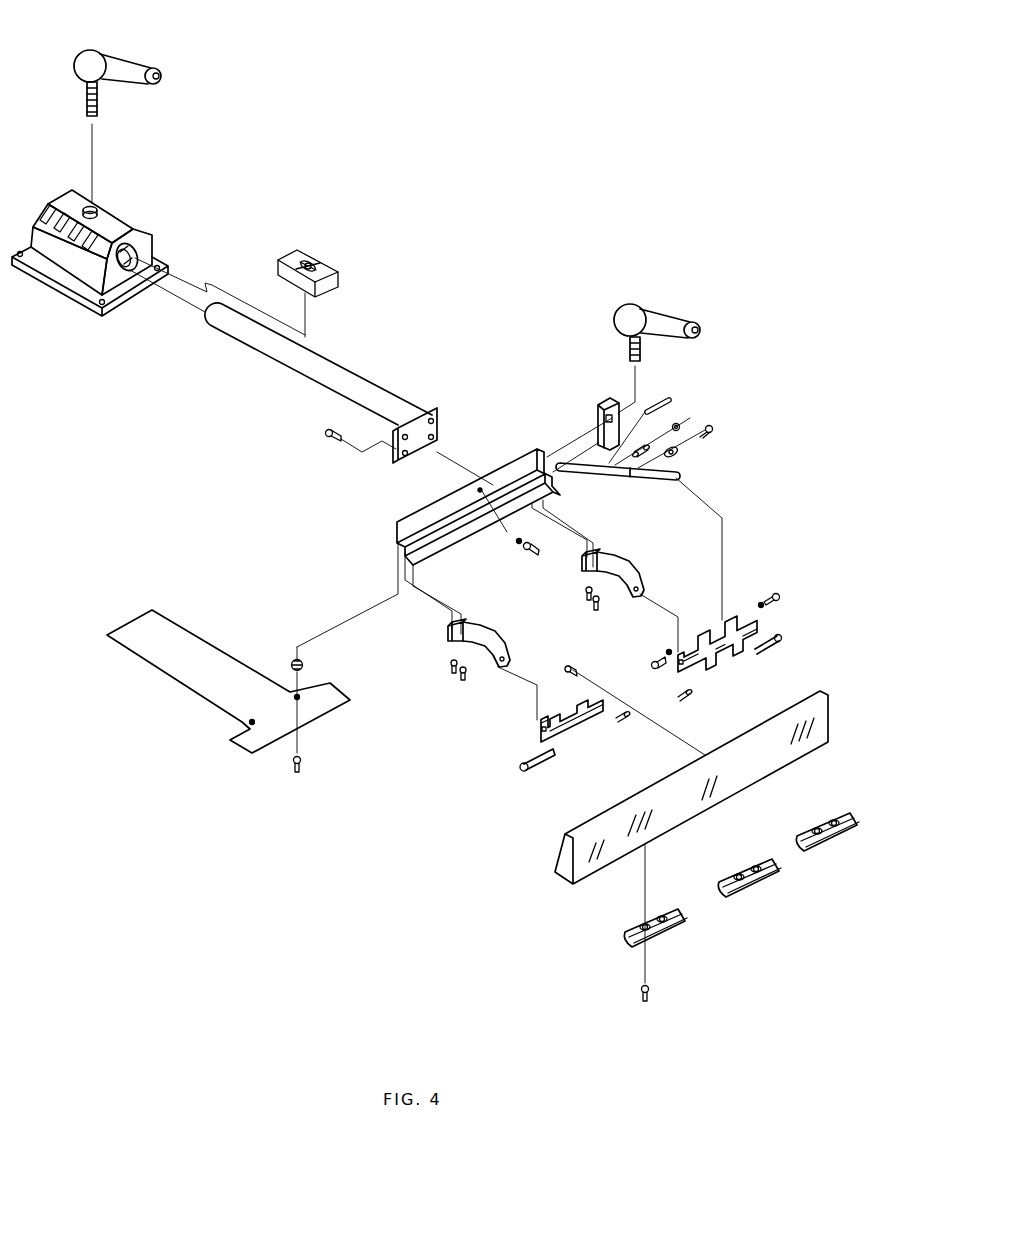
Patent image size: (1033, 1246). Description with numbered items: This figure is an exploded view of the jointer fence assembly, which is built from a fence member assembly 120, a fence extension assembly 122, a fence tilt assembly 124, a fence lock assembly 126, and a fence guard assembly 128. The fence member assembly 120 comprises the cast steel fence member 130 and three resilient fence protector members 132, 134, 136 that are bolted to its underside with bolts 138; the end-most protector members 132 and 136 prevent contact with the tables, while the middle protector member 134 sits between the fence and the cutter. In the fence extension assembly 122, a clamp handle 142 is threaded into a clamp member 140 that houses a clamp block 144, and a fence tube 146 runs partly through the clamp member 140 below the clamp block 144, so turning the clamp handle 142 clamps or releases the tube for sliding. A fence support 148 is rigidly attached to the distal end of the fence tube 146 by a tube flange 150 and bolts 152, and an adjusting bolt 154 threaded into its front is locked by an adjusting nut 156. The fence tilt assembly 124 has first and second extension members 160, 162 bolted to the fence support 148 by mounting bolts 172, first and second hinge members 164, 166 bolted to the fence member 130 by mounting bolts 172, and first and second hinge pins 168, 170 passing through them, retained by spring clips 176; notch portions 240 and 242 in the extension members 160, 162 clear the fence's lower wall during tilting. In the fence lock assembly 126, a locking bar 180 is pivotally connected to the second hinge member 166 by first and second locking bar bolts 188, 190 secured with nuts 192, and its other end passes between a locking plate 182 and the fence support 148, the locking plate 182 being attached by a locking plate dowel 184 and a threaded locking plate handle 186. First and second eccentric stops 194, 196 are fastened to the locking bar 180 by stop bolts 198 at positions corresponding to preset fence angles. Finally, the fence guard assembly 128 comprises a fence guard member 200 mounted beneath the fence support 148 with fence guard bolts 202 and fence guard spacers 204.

The fence member assembly 120 is at (497, 958).
The fence extension assembly 122 is at (372, 110).
The fence tilt assembly 124 is at (427, 857).
The fence lock assembly 126 is at (800, 358).
The fence guard assembly 128 is at (170, 747).
The fence member 130 is at (551, 873).
The fence protector member 132 is at (625, 953).
The fence protector member 134 is at (757, 890).
The fence protector member 136 is at (838, 843).
The bolt 138 is at (653, 1007).
The clamp member 140 is at (150, 243).
The clamp handle 142 is at (116, 60).
The clamp block 144 is at (298, 252).
The fence tube 146 is at (367, 382).
The fence support 148 is at (505, 467).
The tube flange 150 is at (440, 422).
The bolt 152 is at (318, 443).
The adjusting bolt 154 is at (539, 563).
The adjusting nut 156 is at (528, 535).
The first extension member 160 is at (490, 658).
The second extension member 162 is at (606, 579).
The first hinge member 164 is at (560, 733).
The second hinge member 166 is at (710, 664).
The first hinge pin 168 is at (533, 773).
The second hinge pin 170 is at (775, 652).
The mounting bolt 172 is at (440, 678).
The spring clip 176 is at (678, 695).
The locking bar 180 is at (612, 477).
The locking plate 182 is at (595, 398).
The locking plate dowel 184 is at (677, 398).
The locking plate handle 186 is at (648, 303).
The first locking bar bolt 188 is at (652, 672).
The second locking bar bolt 190 is at (787, 602).
The nut 192 is at (668, 652).
The first eccentric stop 194 is at (638, 437).
The second eccentric stop 196 is at (690, 455).
The stop bolt 198 is at (682, 418).
The fence guard member 200 is at (148, 602).
The fence guard bolt 202 is at (293, 777).
The fence guard spacer 204 is at (285, 645).
The notch portion 240 is at (495, 665).
The notch portion 242 is at (638, 573).